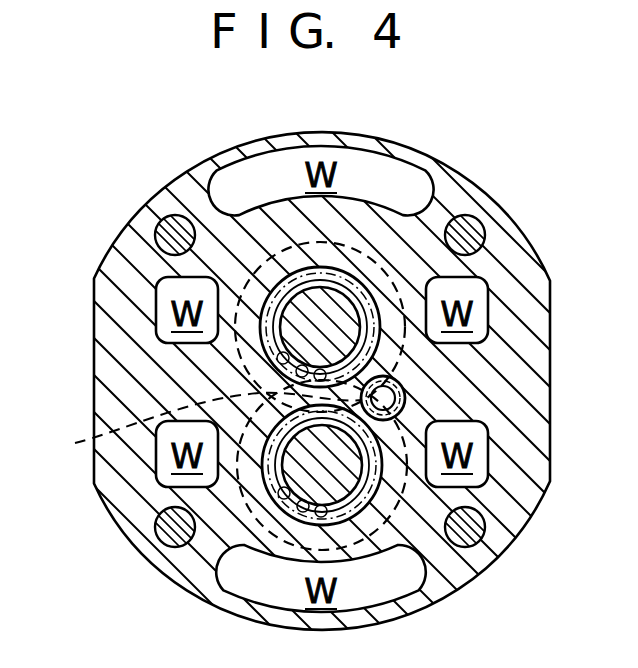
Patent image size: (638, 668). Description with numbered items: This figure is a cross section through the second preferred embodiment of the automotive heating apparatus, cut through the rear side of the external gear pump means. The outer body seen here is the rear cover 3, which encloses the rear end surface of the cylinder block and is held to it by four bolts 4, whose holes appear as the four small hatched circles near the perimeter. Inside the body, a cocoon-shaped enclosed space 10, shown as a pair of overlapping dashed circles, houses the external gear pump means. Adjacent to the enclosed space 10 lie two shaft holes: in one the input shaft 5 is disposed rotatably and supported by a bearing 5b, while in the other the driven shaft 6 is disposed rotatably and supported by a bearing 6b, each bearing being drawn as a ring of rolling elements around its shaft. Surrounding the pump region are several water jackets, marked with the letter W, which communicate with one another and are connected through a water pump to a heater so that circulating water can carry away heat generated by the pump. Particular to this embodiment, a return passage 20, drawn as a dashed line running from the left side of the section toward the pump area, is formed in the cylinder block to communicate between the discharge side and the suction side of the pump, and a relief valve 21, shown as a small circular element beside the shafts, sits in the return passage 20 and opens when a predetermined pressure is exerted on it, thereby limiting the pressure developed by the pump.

The rear cover 3 is at (451, 195).
The bolts 4 is at (161, 221).
The input shaft 5 is at (308, 480).
The bearing 5b is at (360, 512).
The driven shaft 6 is at (340, 310).
The bearing 6b is at (290, 280).
The enclosed space 10 is at (348, 243).
The return passage 20 is at (198, 437).
The relief valve 21 is at (401, 398).